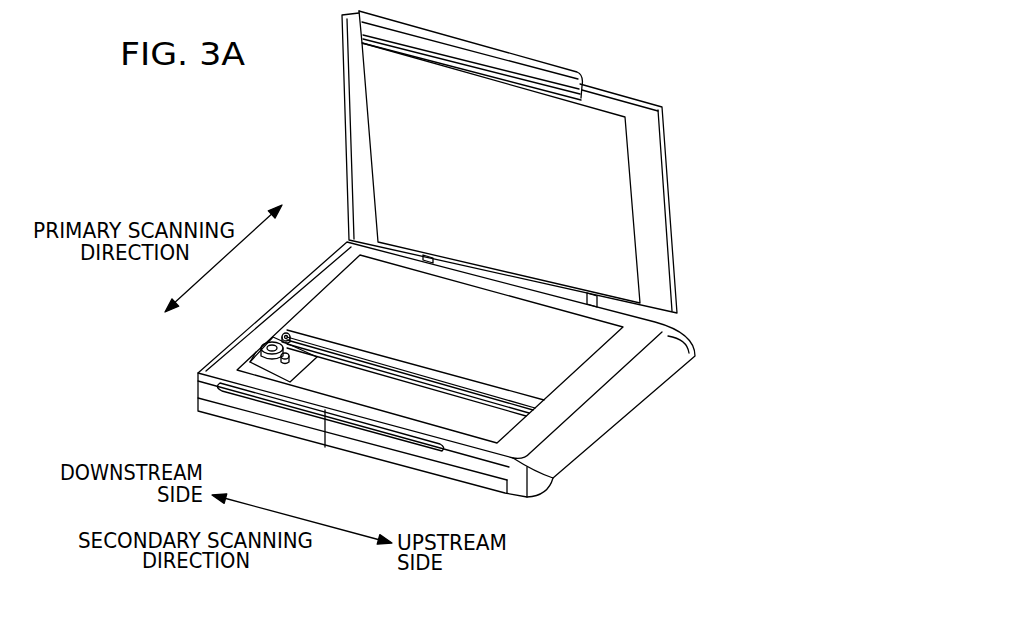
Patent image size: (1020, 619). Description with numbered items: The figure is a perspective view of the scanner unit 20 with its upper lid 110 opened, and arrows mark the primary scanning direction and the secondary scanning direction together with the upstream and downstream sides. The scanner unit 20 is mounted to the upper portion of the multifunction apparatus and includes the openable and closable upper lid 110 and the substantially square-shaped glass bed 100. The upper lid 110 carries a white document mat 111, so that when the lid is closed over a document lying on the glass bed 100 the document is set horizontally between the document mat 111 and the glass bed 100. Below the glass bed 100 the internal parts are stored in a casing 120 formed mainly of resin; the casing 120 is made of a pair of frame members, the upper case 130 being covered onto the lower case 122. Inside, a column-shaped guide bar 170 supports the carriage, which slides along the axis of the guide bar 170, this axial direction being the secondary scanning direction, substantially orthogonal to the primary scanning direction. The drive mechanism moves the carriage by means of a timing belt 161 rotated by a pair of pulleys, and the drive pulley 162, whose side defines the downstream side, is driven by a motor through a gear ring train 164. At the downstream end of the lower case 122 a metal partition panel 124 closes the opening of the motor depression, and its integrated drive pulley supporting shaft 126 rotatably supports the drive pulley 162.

The scanner unit 20 is at (684, 92).
The glass bed 100 is at (340, 297).
The upper lid 110 is at (652, 188).
The document mat 111 is at (593, 130).
The casing 120 is at (757, 312).
The lower case 122 is at (560, 362).
The partition panel 124 is at (248, 358).
The drive pulley supporting shaft 126 is at (270, 345).
The upper case 130 is at (667, 328).
The timing belt 161 is at (457, 400).
The drive pulley 162 is at (283, 337).
The gear ring train 164 is at (303, 360).
The guide bar 170 is at (427, 367).